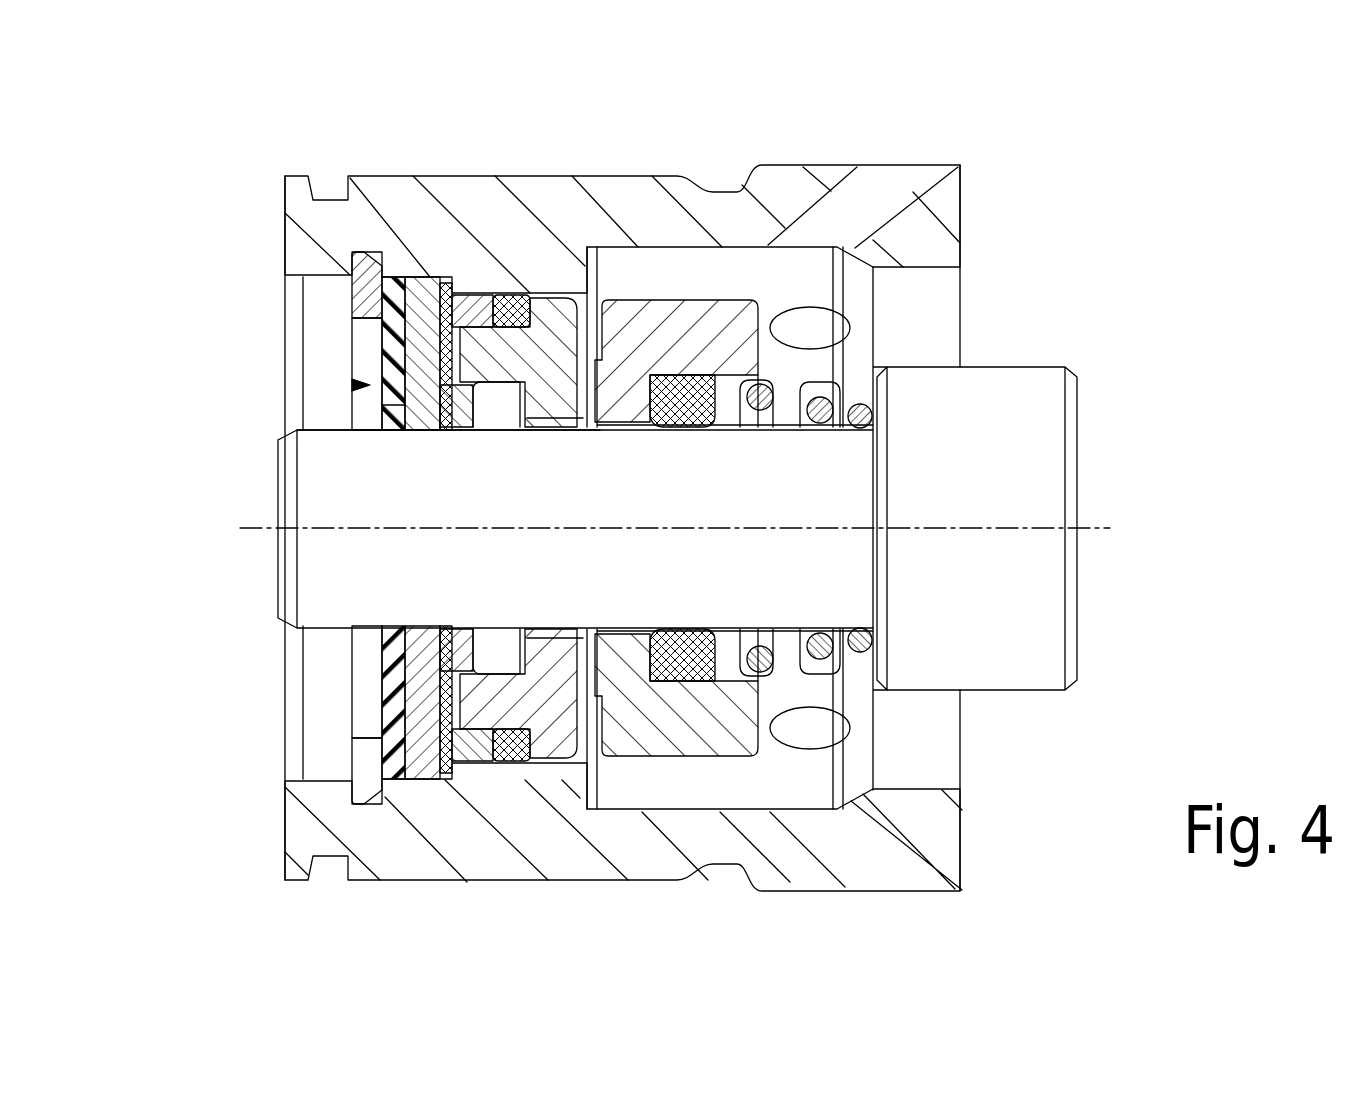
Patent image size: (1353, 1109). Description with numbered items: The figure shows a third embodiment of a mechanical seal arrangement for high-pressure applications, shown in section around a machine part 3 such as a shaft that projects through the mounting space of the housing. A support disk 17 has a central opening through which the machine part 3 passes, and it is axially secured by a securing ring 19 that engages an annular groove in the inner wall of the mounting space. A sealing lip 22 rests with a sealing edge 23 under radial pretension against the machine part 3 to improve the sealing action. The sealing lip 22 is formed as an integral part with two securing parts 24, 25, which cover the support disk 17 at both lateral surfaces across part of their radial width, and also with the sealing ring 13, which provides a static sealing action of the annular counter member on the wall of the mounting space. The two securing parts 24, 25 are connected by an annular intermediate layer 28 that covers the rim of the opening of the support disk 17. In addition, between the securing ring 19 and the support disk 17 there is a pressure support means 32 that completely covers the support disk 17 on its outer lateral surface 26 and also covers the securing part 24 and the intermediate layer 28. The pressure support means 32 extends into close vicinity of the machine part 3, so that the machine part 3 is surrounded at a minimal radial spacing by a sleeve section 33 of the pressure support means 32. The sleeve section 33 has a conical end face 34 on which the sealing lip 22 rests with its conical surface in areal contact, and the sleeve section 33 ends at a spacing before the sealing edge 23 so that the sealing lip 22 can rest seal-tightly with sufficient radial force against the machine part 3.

The machine part 3 is at (328, 557).
The sealing ring 13 is at (518, 295).
The support disk 17 is at (380, 702).
The securing ring 19 is at (350, 273).
The sealing lip 22 is at (407, 432).
The sealing edge 23 is at (485, 432).
The securing part 24 is at (362, 342).
The securing part 25 is at (447, 293).
The outer lateral surface 26 is at (427, 277).
The intermediate layer 28 is at (395, 405).
The pressure support means 32 is at (352, 385).
The sleeve section 33 is at (383, 650).
The conical end face 34 is at (457, 628).